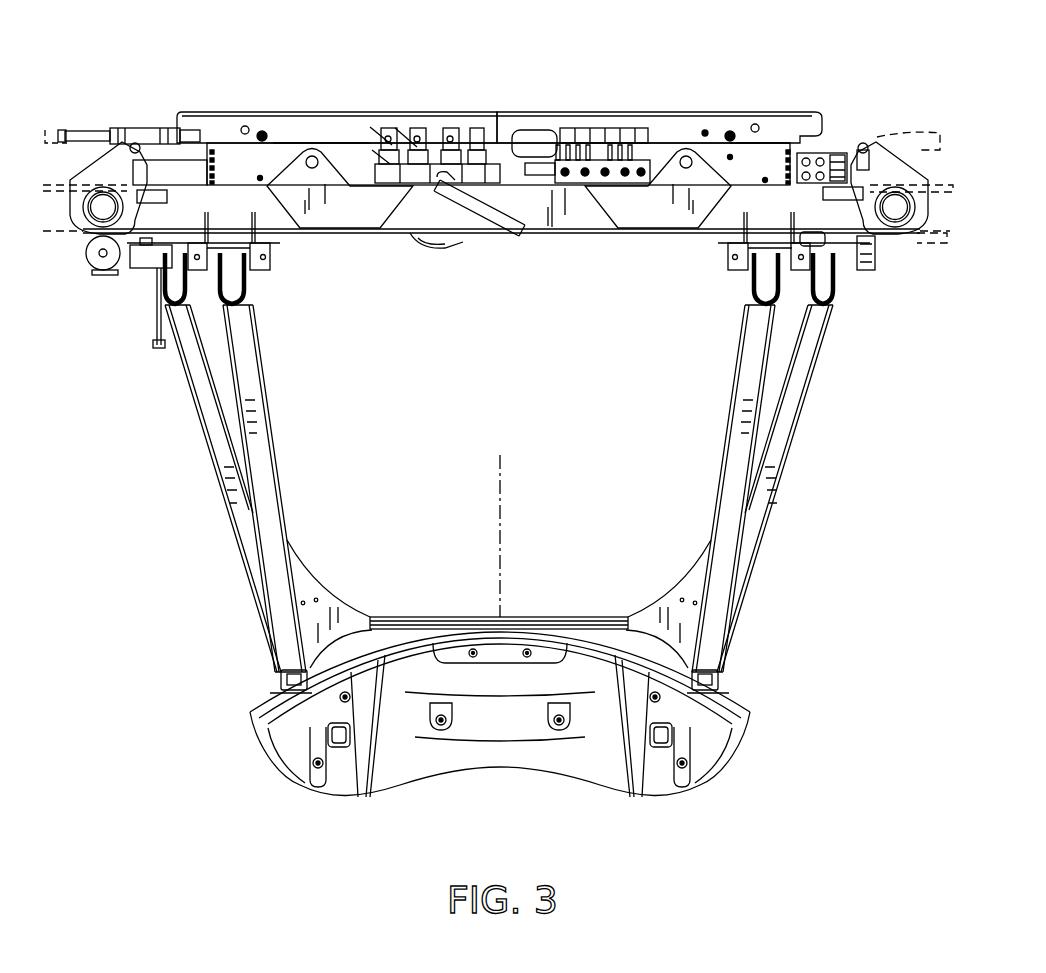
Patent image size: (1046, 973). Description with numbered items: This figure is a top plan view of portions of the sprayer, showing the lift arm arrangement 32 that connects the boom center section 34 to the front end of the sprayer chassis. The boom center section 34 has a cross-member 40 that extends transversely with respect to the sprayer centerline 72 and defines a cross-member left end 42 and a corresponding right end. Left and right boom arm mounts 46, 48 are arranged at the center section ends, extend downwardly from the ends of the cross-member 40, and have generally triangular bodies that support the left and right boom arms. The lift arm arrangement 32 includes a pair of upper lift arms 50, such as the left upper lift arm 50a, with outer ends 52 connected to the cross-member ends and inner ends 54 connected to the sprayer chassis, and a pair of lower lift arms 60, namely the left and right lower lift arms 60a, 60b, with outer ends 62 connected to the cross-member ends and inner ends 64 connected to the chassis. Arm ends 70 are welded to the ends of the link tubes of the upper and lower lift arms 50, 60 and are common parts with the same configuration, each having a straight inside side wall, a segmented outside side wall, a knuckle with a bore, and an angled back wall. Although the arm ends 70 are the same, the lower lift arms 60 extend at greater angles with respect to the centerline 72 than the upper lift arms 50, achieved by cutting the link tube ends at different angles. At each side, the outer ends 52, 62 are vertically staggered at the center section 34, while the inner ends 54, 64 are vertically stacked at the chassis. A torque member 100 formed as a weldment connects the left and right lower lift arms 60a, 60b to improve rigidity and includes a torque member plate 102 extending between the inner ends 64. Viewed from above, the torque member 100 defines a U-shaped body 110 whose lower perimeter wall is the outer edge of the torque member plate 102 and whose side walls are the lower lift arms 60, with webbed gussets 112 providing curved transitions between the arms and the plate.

The lift arm arrangement 32 is at (845, 550).
The boom center section 34 is at (488, 72).
The cross-member 40 is at (512, 108).
The cross-member left end 42 is at (200, 112).
The left boom arm mount 46 is at (90, 112).
The right boom arm mount 48 is at (897, 112).
The upper lift arms 50 is at (300, 437).
The left upper lift arm 50a is at (300, 468).
The upper lift arm outer ends 52 is at (268, 317).
The upper lift arm inner ends 54 is at (248, 662).
The lower lift arms 60 is at (205, 508).
The left lower lift arm 60a is at (212, 538).
The right lower lift arm 60b is at (815, 489).
The lower lift arm outer ends 62 is at (143, 325).
The lower lift arm inner ends 64 is at (250, 607).
The arm ends 70 is at (150, 290).
The centerline 72 is at (518, 508).
The torque member 100 is at (362, 517).
The torque member plate 102 is at (545, 620).
The U-shaped body 110 is at (322, 557).
The webbed gussets 112 is at (330, 600).